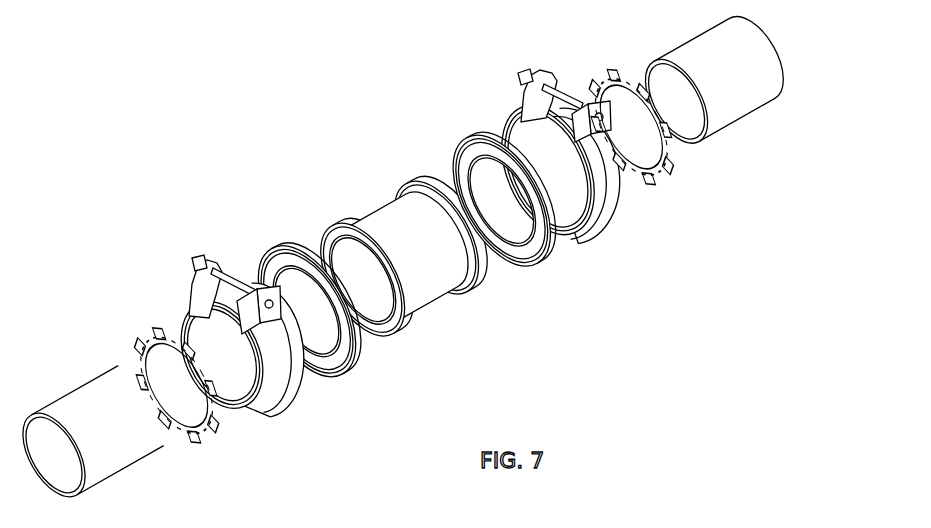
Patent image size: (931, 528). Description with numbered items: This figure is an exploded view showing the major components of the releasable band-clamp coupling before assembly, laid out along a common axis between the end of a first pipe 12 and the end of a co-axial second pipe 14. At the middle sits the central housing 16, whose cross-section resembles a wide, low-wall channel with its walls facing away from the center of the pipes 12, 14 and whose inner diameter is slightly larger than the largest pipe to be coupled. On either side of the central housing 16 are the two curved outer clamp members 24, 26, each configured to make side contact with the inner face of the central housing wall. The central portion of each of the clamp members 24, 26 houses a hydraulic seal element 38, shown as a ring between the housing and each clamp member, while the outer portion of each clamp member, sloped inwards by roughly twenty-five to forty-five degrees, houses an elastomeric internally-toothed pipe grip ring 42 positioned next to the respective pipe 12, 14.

The first pipe 12 is at (82, 413).
The second pipe 14 is at (733, 93).
The central housing 16 is at (425, 295).
The outer clamp member 24 is at (612, 193).
The outer clamp member 26 is at (270, 385).
The hydraulic seal element 38 is at (350, 358).
The elastomeric internally-toothed pipe grip ring 42 is at (157, 332).